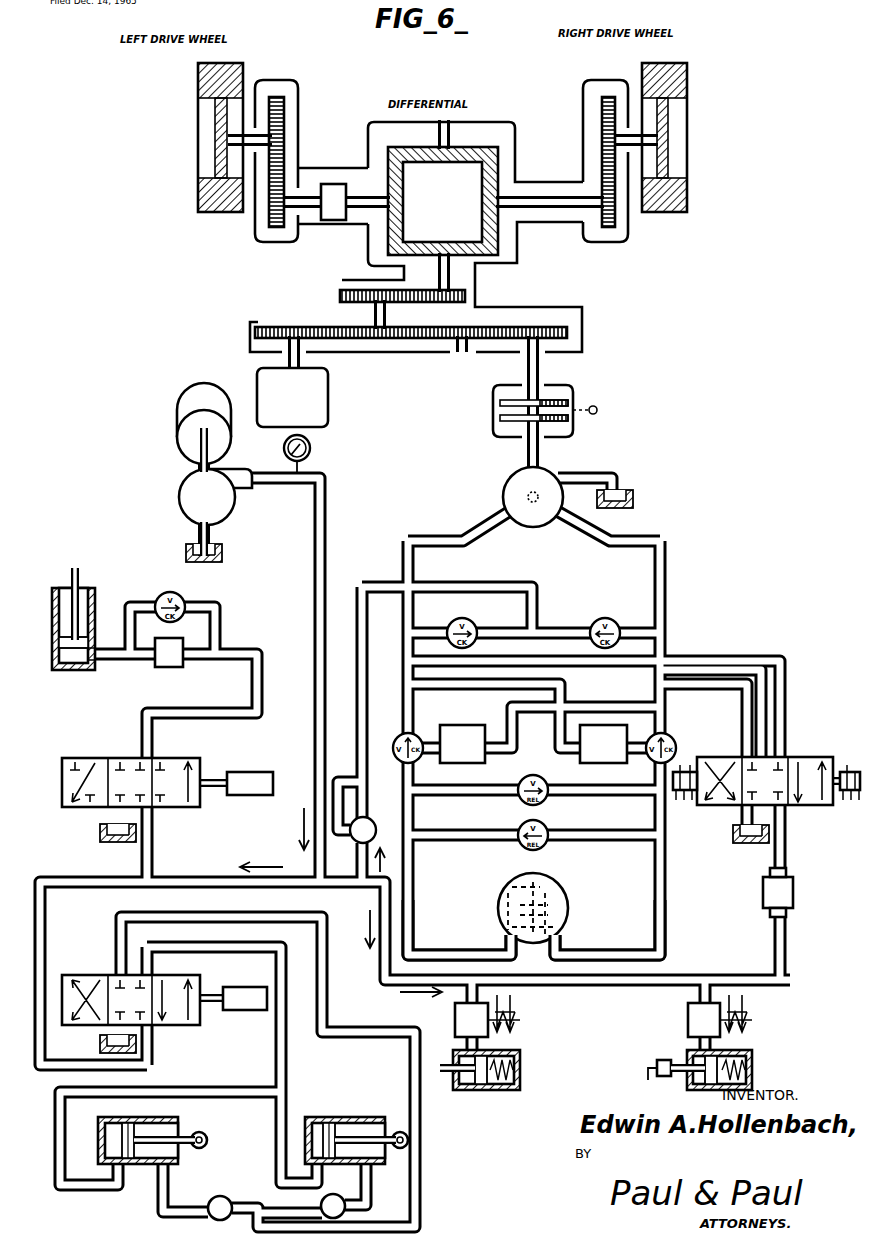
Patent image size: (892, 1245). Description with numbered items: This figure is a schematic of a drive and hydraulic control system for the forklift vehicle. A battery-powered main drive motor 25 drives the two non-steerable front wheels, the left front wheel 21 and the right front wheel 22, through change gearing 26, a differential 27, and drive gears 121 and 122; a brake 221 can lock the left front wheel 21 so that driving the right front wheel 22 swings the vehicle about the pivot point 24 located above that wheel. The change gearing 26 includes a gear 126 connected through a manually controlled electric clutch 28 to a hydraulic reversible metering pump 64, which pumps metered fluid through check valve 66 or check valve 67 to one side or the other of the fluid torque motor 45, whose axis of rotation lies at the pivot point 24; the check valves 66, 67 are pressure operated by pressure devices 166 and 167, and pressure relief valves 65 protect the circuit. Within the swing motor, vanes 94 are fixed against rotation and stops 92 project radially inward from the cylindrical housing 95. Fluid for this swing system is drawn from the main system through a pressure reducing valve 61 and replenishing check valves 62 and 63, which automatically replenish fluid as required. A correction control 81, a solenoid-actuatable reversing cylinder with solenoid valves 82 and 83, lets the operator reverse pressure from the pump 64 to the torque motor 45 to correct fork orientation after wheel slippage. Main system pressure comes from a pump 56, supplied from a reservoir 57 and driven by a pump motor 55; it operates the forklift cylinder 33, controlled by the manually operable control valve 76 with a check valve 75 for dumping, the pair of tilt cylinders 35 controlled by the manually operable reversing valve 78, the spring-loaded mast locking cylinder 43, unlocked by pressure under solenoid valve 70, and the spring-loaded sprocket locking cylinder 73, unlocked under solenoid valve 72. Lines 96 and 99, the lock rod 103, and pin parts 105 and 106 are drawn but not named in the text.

The left front wheel 21 is at (200, 190).
The right front wheel 22 is at (683, 187).
The drive gear 121 is at (278, 92).
The drive gear 122 is at (605, 92).
The brake 221 is at (333, 220).
The differential 27 is at (503, 241).
The change gearing 26 is at (528, 322).
The gear 126 is at (572, 336).
The main drive motor 25 is at (328, 392).
The electric clutch 28 is at (566, 399).
The hydraulic reversible metering pump 64 is at (545, 482).
The reservoir 57 is at (634, 499).
The pump motor 55 is at (190, 438).
The pump 56 is at (190, 505).
The forklift cylinder 33 is at (95, 605).
The check valve 75 is at (174, 595).
The manually operable control valve 76 is at (90, 757).
The manually operable reversing valve 78 is at (82, 974).
The tilt cylinders 35 is at (180, 1126).
The pressure reducing valve 61 is at (372, 820).
The replenishing check valve 62 is at (468, 620).
The replenishing check valve 63 is at (608, 620).
The check valve 66 is at (398, 732).
The check valve 67 is at (672, 735).
The pressure device 166 is at (462, 744).
The pressure device 167 is at (603, 744).
The pressure relief valves 65 is at (547, 797).
The correction control 81 is at (808, 755).
The solenoid valve 82 is at (685, 770).
The solenoid valve 83 is at (845, 766).
The pivot point 24 is at (505, 925).
The stops 92 is at (512, 887).
The vanes 94 is at (516, 886).
The cylindrical housing 95 is at (540, 880).
The fluid torque motor 45 is at (551, 892).
The hydraulic line 96 is at (443, 957).
The hydraulic line 99 is at (637, 957).
The solenoid valve 70 is at (487, 1016).
The solenoid valve 72 is at (720, 1016).
The mast locking cylinder 43 is at (468, 1092).
The mast lock pin rod 103 is at (445, 1075).
The sprocket locking cylinder 73 is at (752, 1052).
The lock pin head 105 is at (687, 1060).
The lock pin rod 106 is at (664, 1087).